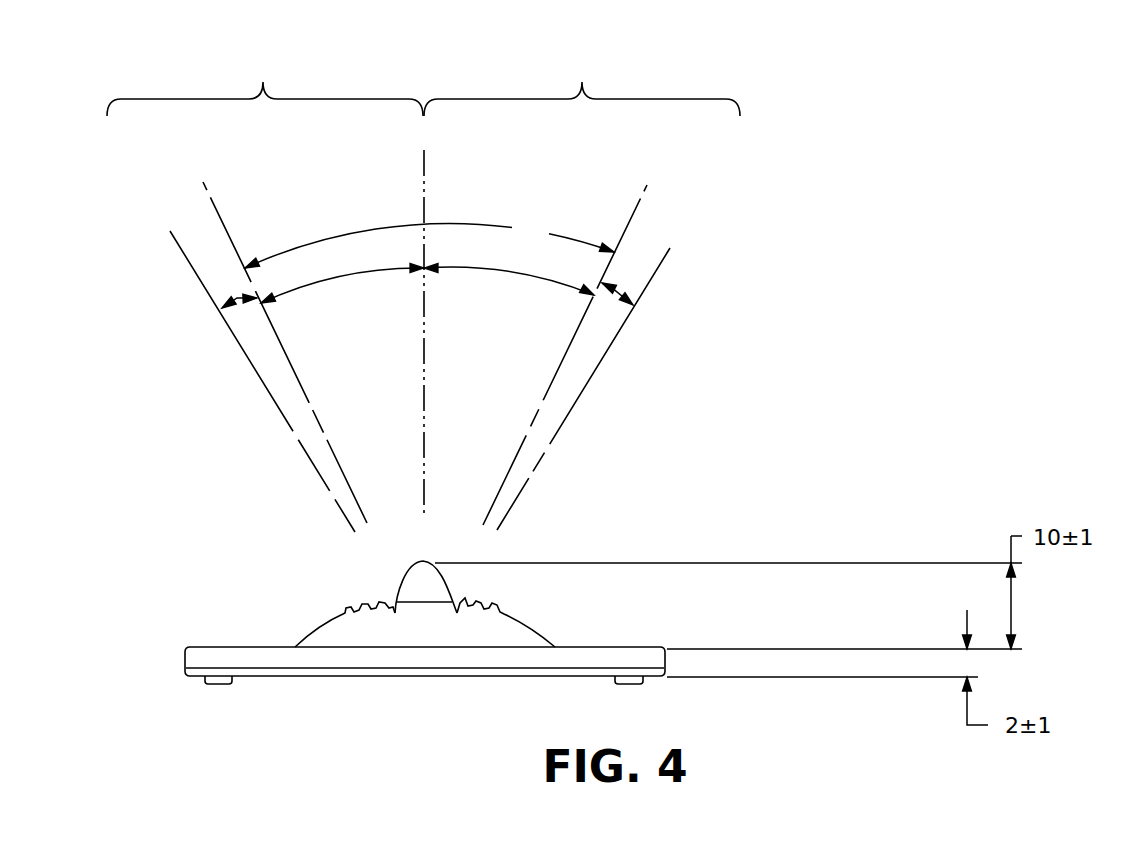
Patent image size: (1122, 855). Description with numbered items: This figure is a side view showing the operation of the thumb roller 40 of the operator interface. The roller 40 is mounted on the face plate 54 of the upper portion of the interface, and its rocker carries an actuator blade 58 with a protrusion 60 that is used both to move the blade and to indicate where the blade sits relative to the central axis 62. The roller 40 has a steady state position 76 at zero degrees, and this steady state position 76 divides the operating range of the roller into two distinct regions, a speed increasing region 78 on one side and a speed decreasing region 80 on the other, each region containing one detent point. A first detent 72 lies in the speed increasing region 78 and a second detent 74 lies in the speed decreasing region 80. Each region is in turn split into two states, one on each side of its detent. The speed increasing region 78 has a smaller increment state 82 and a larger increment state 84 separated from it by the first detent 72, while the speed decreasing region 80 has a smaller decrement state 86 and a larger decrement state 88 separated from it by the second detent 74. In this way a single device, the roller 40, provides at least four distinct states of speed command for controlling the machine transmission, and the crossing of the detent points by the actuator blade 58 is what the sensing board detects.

The roller 40 is at (389, 624).
The face plate 54 is at (195, 655).
The actuator blade 58 is at (503, 634).
The protrusion 60 is at (435, 582).
The central axis 62 is at (429, 244).
The first detent 72 is at (645, 198).
The second detent 74 is at (218, 215).
The steady state position 76 is at (426, 186).
The speed increasing region 78 is at (582, 82).
The speed decreasing region 80 is at (265, 82).
The smaller increment state 82 is at (514, 268).
The larger increment state 84 is at (612, 288).
The smaller decrement state 86 is at (382, 271).
The larger decrement state 88 is at (237, 298).